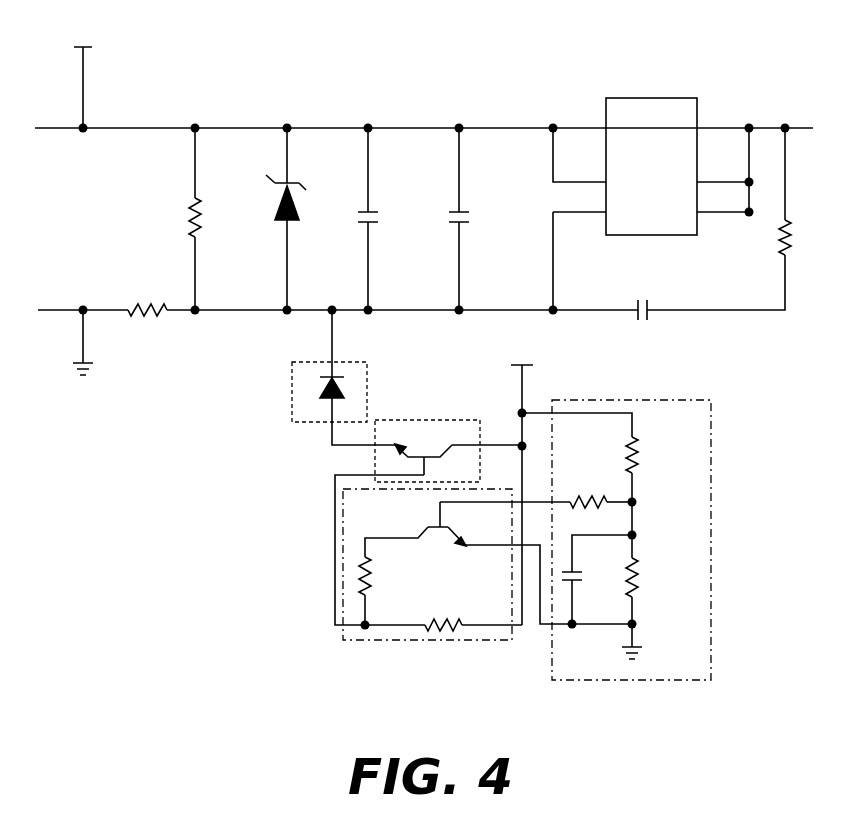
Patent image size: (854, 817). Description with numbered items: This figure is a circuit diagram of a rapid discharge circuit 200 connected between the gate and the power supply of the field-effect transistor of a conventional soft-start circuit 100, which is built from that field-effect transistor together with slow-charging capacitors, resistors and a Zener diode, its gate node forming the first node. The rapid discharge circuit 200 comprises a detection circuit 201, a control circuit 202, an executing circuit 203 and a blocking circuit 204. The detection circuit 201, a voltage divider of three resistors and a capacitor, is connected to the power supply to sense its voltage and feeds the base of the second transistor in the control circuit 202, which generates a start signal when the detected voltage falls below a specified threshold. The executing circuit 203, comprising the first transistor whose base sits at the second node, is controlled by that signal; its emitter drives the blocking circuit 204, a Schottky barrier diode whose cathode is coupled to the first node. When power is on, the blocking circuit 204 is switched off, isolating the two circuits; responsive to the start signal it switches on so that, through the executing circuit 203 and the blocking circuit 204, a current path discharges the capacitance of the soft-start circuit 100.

The soft-start circuit 100 is at (413, 100).
The rapid discharge circuit 200 is at (252, 509).
The detection circuit 201 is at (711, 468).
The control circuit 202 is at (422, 642).
The executing circuit 203 is at (450, 420).
The blocking circuit 204 is at (292, 395).